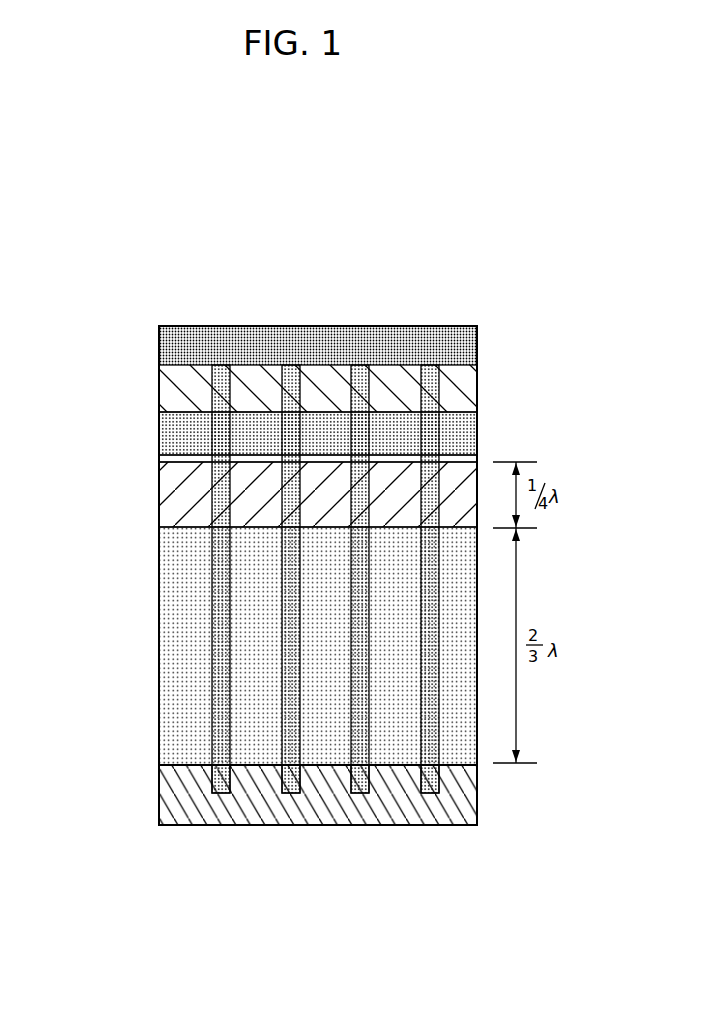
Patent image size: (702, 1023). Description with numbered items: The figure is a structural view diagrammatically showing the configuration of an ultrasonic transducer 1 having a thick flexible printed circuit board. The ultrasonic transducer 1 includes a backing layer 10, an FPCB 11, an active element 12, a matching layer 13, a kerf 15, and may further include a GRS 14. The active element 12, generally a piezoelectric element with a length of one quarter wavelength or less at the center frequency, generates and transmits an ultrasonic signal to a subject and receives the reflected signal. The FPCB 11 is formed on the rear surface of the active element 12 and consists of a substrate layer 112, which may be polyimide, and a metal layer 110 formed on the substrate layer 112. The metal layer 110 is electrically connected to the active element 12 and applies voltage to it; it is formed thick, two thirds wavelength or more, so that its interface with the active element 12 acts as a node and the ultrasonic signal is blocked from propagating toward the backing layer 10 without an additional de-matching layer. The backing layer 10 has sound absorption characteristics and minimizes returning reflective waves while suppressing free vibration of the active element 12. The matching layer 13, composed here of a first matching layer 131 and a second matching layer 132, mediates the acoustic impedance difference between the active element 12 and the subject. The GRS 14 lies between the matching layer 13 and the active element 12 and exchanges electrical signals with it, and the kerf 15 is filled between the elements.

The ultrasonic transducer 1 is at (416, 300).
The backing layer 10 is at (165, 810).
The flexible printed circuit board 11 is at (269, 646).
The metal layer 110 is at (172, 665).
The substrate layer 112 is at (158, 765).
The active element 12 is at (159, 493).
The matching layer 13 is at (266, 410).
The first matching layer 131 is at (159, 431).
The second matching layer 132 is at (159, 383).
The ground sheet 14 is at (159, 454).
The kerf 15 is at (208, 772).